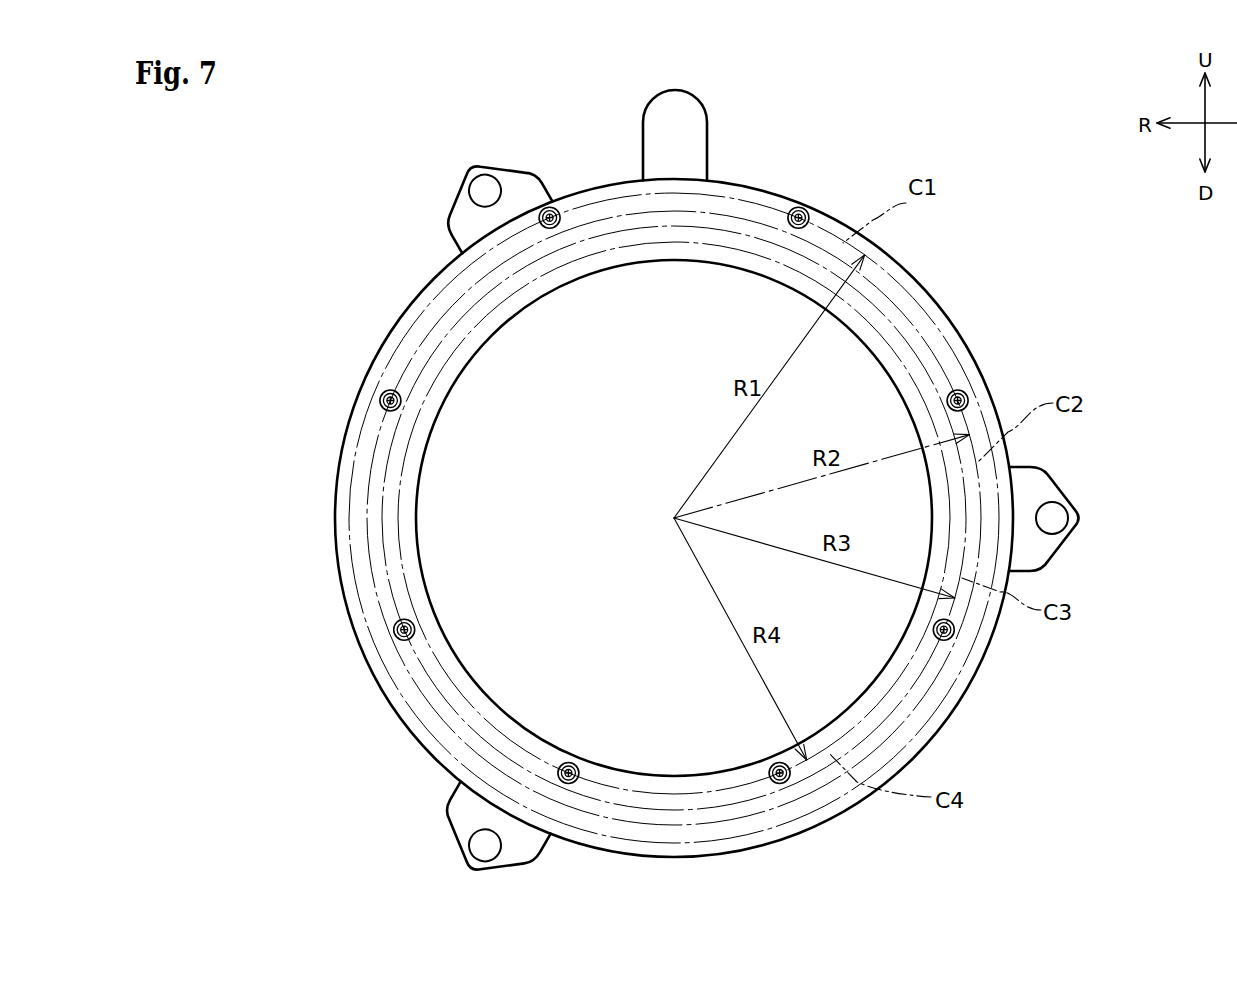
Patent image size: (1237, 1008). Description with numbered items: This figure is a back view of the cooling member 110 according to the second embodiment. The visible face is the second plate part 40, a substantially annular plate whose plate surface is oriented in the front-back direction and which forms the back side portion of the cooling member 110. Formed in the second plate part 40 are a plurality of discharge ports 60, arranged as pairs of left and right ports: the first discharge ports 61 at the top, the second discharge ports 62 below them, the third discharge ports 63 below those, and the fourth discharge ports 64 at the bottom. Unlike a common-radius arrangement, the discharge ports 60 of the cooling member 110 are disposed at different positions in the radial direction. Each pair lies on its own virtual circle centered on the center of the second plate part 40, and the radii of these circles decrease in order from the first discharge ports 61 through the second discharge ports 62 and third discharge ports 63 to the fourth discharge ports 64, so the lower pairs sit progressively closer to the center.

The cooling member 110 is at (690, 492).
The second plate part 40 is at (725, 188).
The discharge ports 60 is at (690, 488).
The first discharge ports 61 is at (802, 206).
The second discharge ports 62 is at (383, 395).
The third discharge ports 63 is at (415, 627).
The fourth discharge ports 64 is at (575, 764).